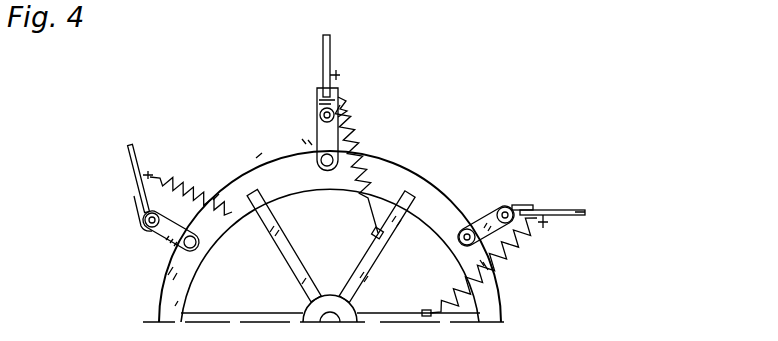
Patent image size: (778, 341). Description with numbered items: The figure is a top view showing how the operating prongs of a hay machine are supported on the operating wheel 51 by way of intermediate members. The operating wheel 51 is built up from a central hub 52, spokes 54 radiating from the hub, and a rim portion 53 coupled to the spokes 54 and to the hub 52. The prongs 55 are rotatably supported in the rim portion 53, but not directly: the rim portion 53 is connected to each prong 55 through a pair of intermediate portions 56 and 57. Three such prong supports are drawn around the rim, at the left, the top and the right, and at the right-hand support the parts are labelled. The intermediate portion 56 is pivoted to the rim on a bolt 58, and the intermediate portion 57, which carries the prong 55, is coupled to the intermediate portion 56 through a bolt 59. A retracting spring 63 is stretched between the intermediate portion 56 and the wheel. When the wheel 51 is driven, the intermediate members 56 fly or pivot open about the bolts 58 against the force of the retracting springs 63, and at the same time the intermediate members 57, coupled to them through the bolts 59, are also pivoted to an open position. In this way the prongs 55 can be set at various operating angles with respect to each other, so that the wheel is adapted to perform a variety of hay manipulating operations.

The operating wheel 51 is at (526, 146).
The hub 52 is at (330, 303).
The rim portion 53 is at (385, 168).
The spokes 54 is at (398, 198).
The prongs 55 is at (578, 210).
The intermediate portion 56 is at (488, 214).
The intermediate portion 57 is at (530, 206).
The bolt 58 is at (468, 229).
The bolt 59 is at (515, 207).
The retracting spring 63 is at (510, 253).